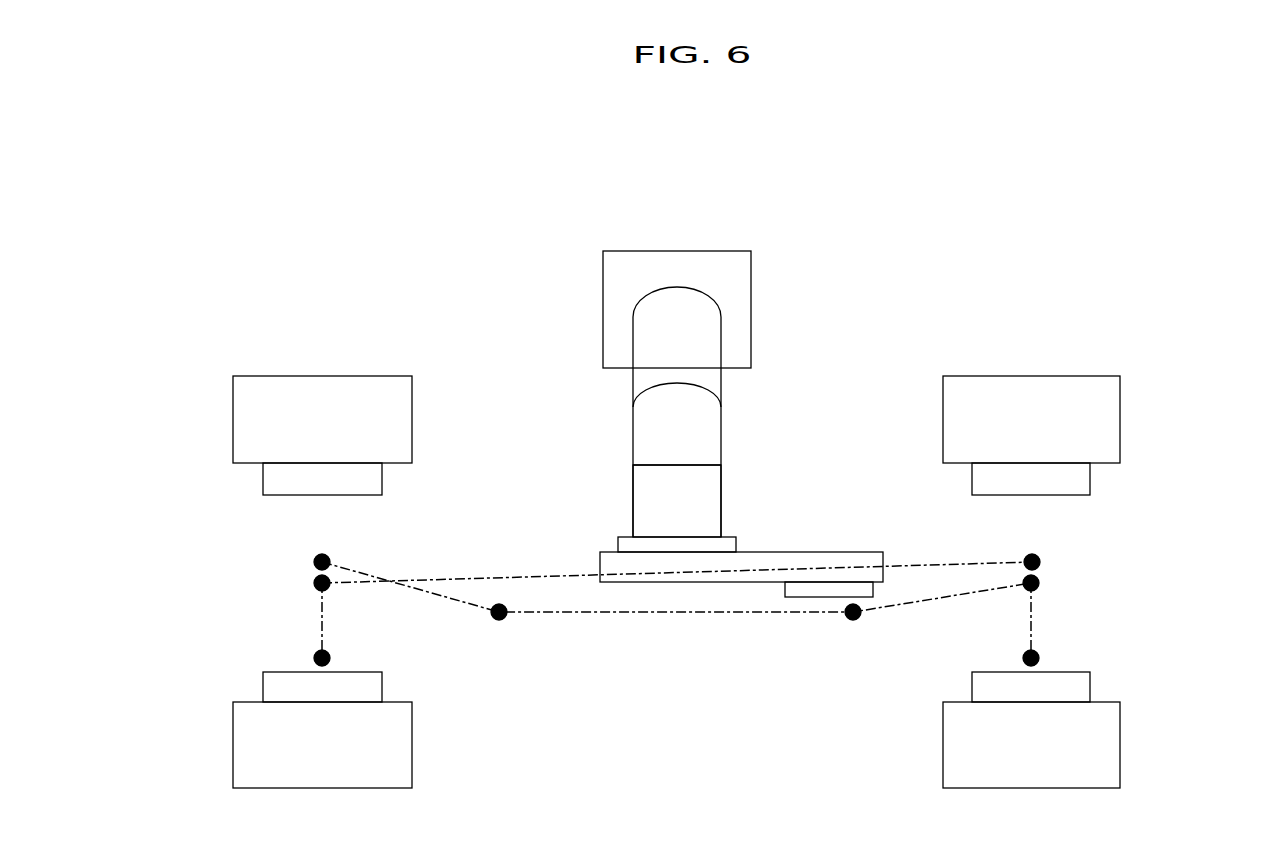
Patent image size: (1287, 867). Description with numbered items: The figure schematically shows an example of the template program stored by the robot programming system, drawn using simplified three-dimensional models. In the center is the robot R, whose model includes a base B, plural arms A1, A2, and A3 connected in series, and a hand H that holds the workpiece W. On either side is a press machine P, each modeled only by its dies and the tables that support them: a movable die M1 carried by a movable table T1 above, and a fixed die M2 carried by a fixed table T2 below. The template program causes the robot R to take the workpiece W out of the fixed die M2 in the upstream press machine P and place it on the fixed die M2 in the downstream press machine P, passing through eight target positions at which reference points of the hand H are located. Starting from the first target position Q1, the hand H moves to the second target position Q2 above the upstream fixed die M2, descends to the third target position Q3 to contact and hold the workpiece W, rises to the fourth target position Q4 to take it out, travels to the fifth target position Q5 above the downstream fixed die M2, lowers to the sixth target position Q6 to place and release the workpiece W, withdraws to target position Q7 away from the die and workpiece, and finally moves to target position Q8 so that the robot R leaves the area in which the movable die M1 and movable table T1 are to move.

The robot R is at (644, 333).
The base B is at (605, 312).
The arm A1 is at (647, 374).
The arm A2 is at (647, 447).
The arm A3 is at (647, 506).
The hand H is at (795, 552).
The workpiece W is at (797, 597).
The press machine P is at (327, 365).
The movable table T1 is at (233, 420).
The movable die M1 is at (263, 476).
The fixed table T2 is at (233, 745).
The fixed die M2 is at (263, 684).
The first target position Q1 is at (500, 620).
The second target position Q2 is at (315, 561).
The third target position Q3 is at (315, 657).
The fourth target position Q4 is at (315, 583).
The fifth target position Q5 is at (1039, 561).
The sixth target position Q6 is at (1039, 657).
The target position Q7 is at (1039, 583).
The target position Q8 is at (853, 620).